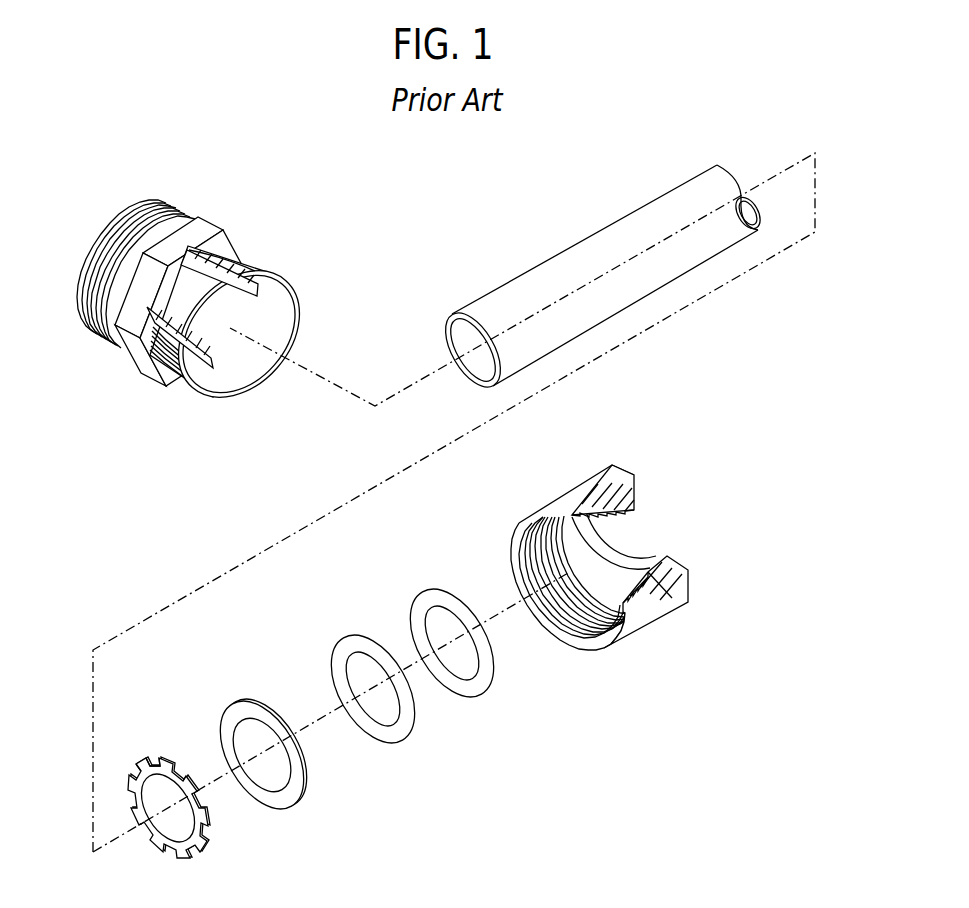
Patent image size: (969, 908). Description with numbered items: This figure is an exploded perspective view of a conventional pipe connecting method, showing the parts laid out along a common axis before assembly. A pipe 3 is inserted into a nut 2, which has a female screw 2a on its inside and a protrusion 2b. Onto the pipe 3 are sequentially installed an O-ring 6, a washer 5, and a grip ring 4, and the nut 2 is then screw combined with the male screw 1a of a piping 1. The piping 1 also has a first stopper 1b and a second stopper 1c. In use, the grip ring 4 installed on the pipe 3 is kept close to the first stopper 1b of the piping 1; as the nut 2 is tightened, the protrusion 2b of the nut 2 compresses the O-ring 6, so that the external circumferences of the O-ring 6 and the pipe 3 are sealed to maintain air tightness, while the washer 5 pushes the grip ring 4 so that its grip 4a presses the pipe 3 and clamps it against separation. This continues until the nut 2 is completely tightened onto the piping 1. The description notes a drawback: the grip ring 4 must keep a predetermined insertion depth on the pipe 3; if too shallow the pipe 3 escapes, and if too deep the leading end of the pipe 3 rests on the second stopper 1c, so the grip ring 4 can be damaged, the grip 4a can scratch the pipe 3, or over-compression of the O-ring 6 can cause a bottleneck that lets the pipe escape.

The piping 1 is at (200, 316).
The male screw 1a is at (196, 394).
The first stopper 1b is at (243, 268).
The second stopper 1c is at (147, 380).
The nut 2 is at (600, 573).
The female screw 2a is at (537, 537).
The protrusion 2b is at (644, 590).
The pipe 3 is at (545, 276).
The grip ring 4 is at (136, 778).
The grip 4a is at (180, 850).
The washer 5 is at (253, 712).
The O-ring 6 is at (487, 665).